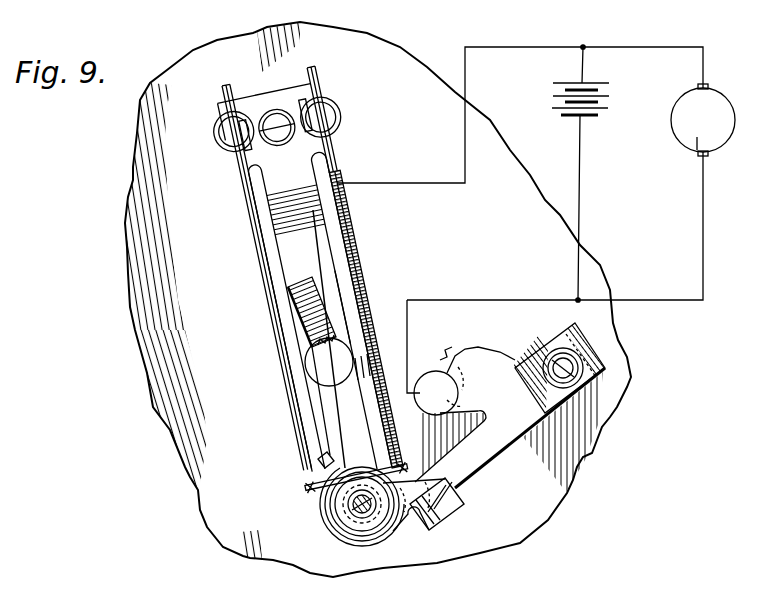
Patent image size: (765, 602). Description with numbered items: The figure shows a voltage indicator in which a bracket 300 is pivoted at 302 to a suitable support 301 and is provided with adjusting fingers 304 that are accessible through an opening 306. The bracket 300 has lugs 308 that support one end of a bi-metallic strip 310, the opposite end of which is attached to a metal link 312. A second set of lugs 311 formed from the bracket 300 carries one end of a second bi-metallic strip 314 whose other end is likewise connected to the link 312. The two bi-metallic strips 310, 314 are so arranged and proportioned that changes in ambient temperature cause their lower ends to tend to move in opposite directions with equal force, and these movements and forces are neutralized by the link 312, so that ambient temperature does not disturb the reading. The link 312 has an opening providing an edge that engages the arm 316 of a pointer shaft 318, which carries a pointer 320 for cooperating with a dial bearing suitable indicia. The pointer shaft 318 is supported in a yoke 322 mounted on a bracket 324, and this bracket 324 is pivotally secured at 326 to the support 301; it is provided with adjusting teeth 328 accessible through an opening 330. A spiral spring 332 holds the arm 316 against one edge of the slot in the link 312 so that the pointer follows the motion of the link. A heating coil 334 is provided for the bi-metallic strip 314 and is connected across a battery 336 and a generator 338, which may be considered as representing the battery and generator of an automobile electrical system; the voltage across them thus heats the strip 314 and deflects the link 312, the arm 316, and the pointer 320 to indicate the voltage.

The bracket 300 is at (287, 93).
The support 301 is at (588, 452).
The pivot 302 is at (275, 110).
The adjusting fingers 304 is at (338, 322).
The opening 306 is at (341, 352).
The lugs 308 is at (249, 172).
The bi-metallic strip 310 is at (262, 268).
The second set of lugs 311 is at (330, 159).
The metal link 312 is at (310, 490).
The second bi-metallic strip 314 is at (335, 168).
The arm 316 is at (317, 461).
The pointer shaft 318 is at (367, 555).
The pointer 320 is at (333, 405).
The yoke 322 is at (408, 533).
The bracket 324 is at (480, 462).
The pivot 326 is at (605, 372).
The adjusting teeth 328 is at (464, 381).
The opening 330 is at (434, 350).
The spiral spring 332 is at (337, 553).
The heating coil 334 is at (351, 242).
The battery 336 is at (612, 78).
The generator 338 is at (698, 140).